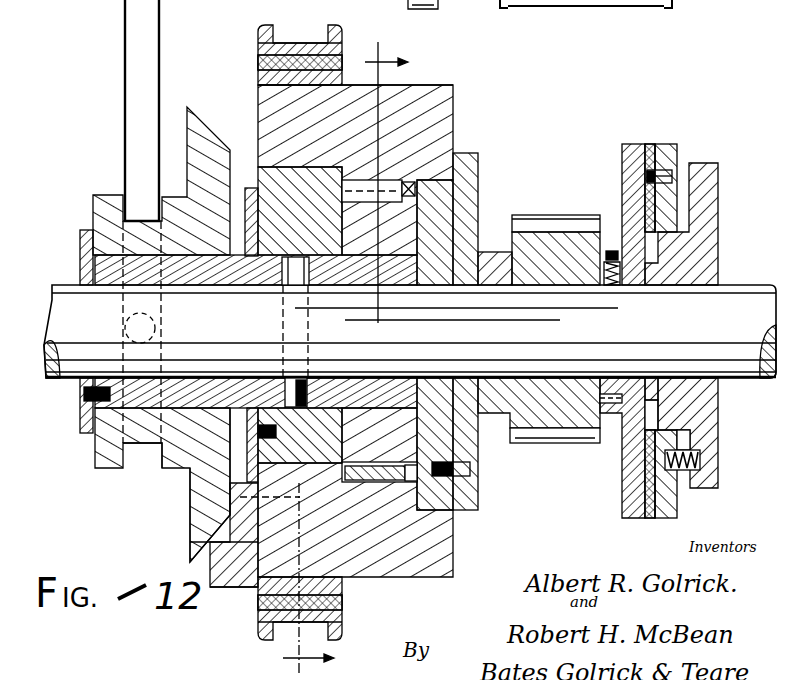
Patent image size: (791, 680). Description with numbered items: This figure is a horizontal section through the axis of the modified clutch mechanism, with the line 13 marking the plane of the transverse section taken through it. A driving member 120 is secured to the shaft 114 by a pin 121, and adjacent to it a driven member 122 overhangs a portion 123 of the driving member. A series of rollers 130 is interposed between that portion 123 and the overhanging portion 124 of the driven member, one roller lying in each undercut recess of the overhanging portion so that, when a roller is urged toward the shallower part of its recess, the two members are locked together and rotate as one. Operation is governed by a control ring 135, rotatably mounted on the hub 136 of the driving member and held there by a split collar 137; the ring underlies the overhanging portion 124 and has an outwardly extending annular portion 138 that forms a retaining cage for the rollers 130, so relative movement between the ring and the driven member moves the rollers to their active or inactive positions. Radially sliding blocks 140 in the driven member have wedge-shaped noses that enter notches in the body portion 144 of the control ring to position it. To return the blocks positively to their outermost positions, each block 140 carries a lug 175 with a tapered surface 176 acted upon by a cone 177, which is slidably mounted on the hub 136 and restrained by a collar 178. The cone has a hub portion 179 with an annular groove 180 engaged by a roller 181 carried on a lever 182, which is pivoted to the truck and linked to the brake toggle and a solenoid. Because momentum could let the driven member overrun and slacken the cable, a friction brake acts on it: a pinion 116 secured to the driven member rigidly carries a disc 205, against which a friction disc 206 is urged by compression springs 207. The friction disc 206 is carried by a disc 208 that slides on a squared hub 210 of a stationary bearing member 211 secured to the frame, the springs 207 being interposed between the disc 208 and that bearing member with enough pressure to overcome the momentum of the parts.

The section line 13— 13 is at (356, 358).
The shaft 114 is at (410, 331).
The pinion 116 is at (587, 196).
The driving member 120 is at (200, 275).
The pin 121 is at (287, 268).
The driven member 122 is at (437, 118).
The portion of the driving member 123 is at (448, 221).
The overhanging portion of the driven member 124 is at (400, 104).
The rollers 130 is at (455, 158).
The control ring 135 is at (265, 175).
The hub 136 is at (272, 410).
The split collar 137 is at (240, 466).
The annular portion 138 is at (415, 190).
The blocks 140 is at (265, 593).
The body portion of the control ring 144 is at (328, 452).
The lug 175 is at (270, 571).
The tapered surface 176 is at (240, 522).
The cone 177 is at (207, 540).
The collar 178 is at (80, 420).
The hub portion of the cone 179 is at (110, 428).
The annular groove 180 is at (125, 458).
The roller 181 is at (124, 326).
The lever 182 is at (118, 221).
The disc 205 is at (632, 165).
The friction disc 206 is at (649, 146).
The compression springs 207 is at (682, 470).
The disc 208 is at (667, 509).
The squared hub 210 is at (667, 424).
The stationary bearing member 211 is at (707, 441).